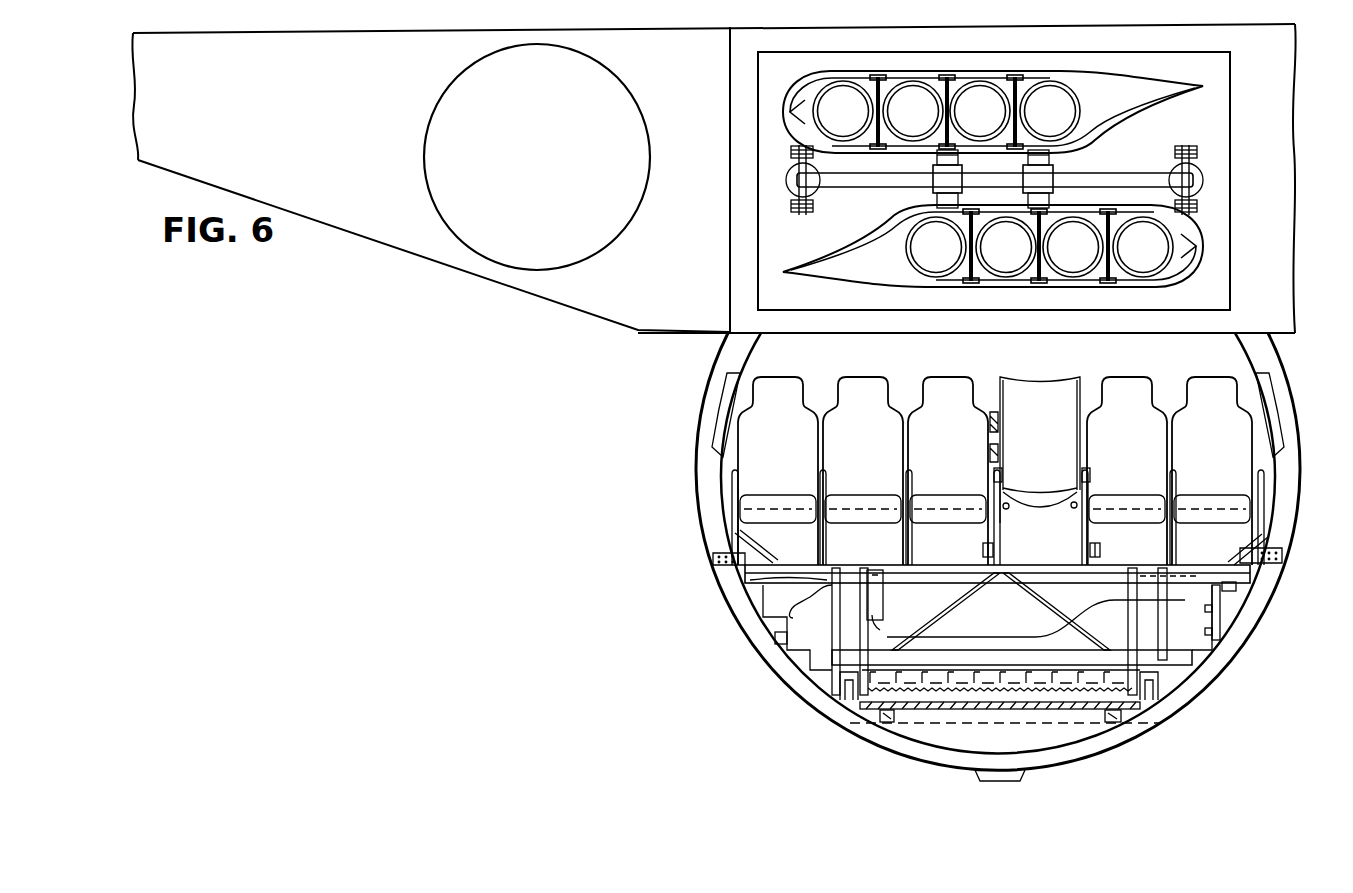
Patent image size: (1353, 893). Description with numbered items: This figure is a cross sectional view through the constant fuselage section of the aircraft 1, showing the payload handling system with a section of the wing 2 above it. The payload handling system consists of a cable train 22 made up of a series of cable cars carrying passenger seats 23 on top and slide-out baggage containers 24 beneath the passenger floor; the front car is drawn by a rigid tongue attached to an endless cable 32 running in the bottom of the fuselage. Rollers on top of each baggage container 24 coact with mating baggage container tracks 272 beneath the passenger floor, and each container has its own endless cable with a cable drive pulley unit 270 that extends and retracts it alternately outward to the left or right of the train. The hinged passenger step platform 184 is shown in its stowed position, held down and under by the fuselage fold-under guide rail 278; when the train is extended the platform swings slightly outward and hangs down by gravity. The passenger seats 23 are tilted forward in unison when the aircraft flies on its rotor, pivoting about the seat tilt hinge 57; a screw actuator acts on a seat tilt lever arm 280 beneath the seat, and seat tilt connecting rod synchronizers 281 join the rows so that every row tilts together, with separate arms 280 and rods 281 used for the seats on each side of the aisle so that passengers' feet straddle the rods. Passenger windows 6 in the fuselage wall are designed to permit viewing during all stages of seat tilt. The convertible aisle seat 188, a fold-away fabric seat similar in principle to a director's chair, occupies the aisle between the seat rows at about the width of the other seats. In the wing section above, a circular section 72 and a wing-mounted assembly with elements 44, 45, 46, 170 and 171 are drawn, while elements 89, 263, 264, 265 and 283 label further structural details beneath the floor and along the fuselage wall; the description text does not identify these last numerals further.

The aircraft 1 is at (1235, 660).
The wing 2 is at (148, 162).
The passenger windows 6 is at (720, 415).
The cable train 22 is at (821, 565).
The passenger seats 23 is at (792, 460).
The slide-out baggage container 24 is at (1014, 616).
The endless cable 32 is at (1000, 697).
The bolts 44 is at (800, 216).
The end fitting 45 is at (792, 196).
The clamp blocks 46 is at (1055, 160).
The seat tilt hinge 57 is at (740, 474).
The engine duct 72 is at (551, 168).
The lower supports 89 is at (833, 698).
The tie rod 170 is at (842, 188).
The connecting stubs 171 is at (1025, 158).
The hinged passenger step platform 184 is at (1214, 612).
The convertible aisle seat 188 is at (1062, 478).
The lower brackets 263 is at (862, 716).
The hold floor 264 is at (872, 725).
The floor brackets 265 is at (718, 566).
The cable drive pulley unit 270 is at (1238, 590).
The baggage container track 272 is at (810, 607).
The fuselage fold-under guide rail 278 is at (777, 645).
The seat tilt lever arm 280 is at (990, 530).
The seat tilt connecting rod synchronizers 281 is at (982, 550).
The seat struts 283 is at (818, 545).